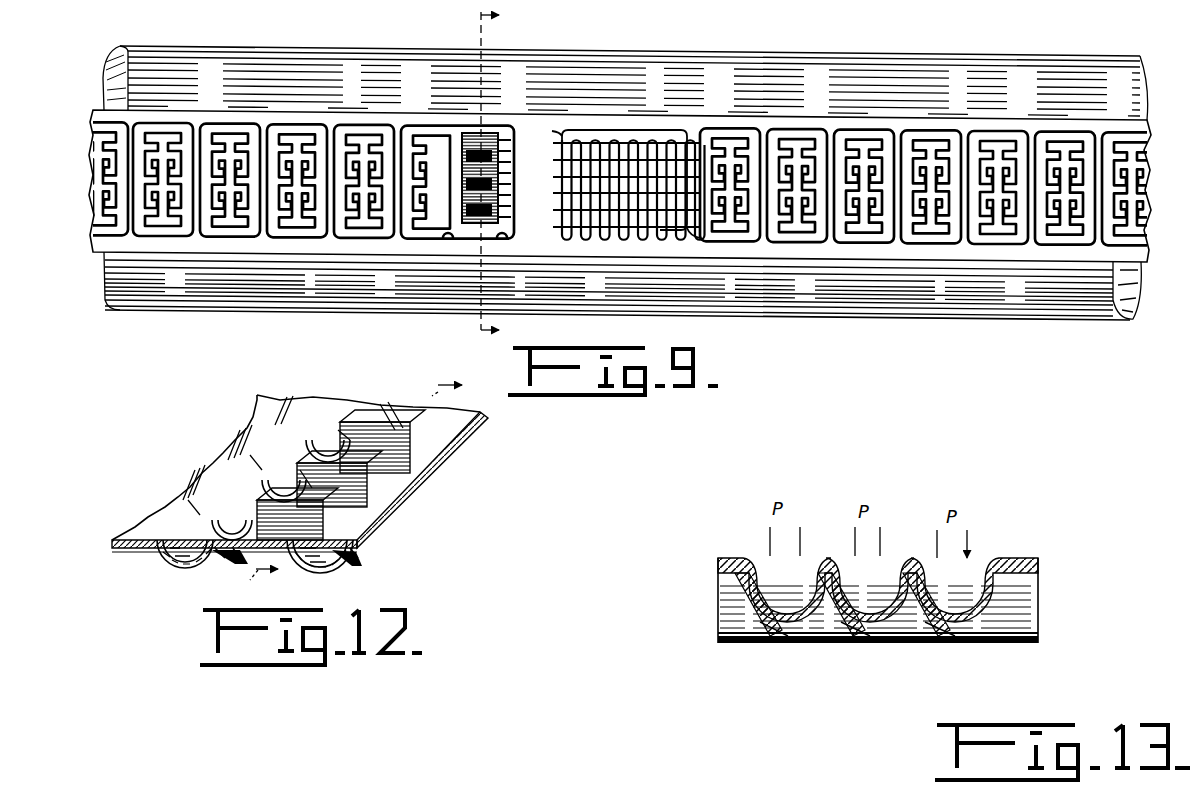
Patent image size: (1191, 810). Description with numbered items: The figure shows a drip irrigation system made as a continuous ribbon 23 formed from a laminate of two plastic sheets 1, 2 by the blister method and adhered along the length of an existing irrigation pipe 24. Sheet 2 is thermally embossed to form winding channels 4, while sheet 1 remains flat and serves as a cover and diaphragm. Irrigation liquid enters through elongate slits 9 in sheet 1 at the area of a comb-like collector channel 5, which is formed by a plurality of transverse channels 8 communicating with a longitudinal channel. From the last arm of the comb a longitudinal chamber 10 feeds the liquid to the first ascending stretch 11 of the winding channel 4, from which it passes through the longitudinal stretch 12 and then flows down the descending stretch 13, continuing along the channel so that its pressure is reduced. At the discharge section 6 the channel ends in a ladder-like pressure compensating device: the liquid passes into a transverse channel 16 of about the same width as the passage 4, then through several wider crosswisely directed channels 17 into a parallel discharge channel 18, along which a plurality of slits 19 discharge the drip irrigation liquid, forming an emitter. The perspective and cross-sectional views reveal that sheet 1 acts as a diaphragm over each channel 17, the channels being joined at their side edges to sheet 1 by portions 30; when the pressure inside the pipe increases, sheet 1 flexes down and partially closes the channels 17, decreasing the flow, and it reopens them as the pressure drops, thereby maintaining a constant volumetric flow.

In FIG. 12, the plastic sheet 1 is at (270, 396).
In FIG. 12, the plastic sheet 2 is at (122, 552).
In FIG. 13, the plastic sheet 2 is at (735, 587).
In FIG. 9, the winding channel 4 is at (290, 122).
In FIG. 9, the collector channel 5 is at (601, 132).
In FIG. 9, the discharge section 6 is at (441, 127).
In FIG. 12, the discharge section 6 is at (308, 392).
In FIG. 9, the transverse channel 8 is at (582, 214).
In FIG. 9, the elongate slit 9 is at (550, 128).
In FIG. 9, the longitudinal chamber 10 is at (692, 237).
In FIG. 9, the ascending stretch 11 is at (708, 165).
In FIG. 9, the longitudinal stretch 12 is at (745, 163).
In FIG. 9, the descending stretch 13 is at (770, 160).
In FIG. 12, the descending stretch 13 is at (369, 481).
In FIG. 9, the transverse channel 16 is at (446, 236).
In FIG. 12, the transverse channel 16 is at (358, 558).
In FIG. 13, the transverse channel 16 is at (848, 636).
In FIG. 9, the crosswisely directed channel 17 is at (490, 206).
In FIG. 12, the crosswisely directed channel 17 is at (366, 440).
In FIG. 13, the crosswisely directed channel 17 is at (776, 636).
In FIG. 9, the discharge channel 18 is at (500, 220).
In FIG. 12, the discharge channel 18 is at (180, 562).
In FIG. 13, the discharge channel 18 is at (1040, 612).
In FIG. 9, the slit 19 is at (511, 192).
In FIG. 12, the slit 19 is at (303, 425).
In FIG. 9, the ribbon 23 is at (883, 128).
In FIG. 9, the irrigation pipe 24 is at (697, 60).
In FIG. 12, the portion 30 is at (240, 562).
In FIG. 13, the portion 30 is at (738, 583).